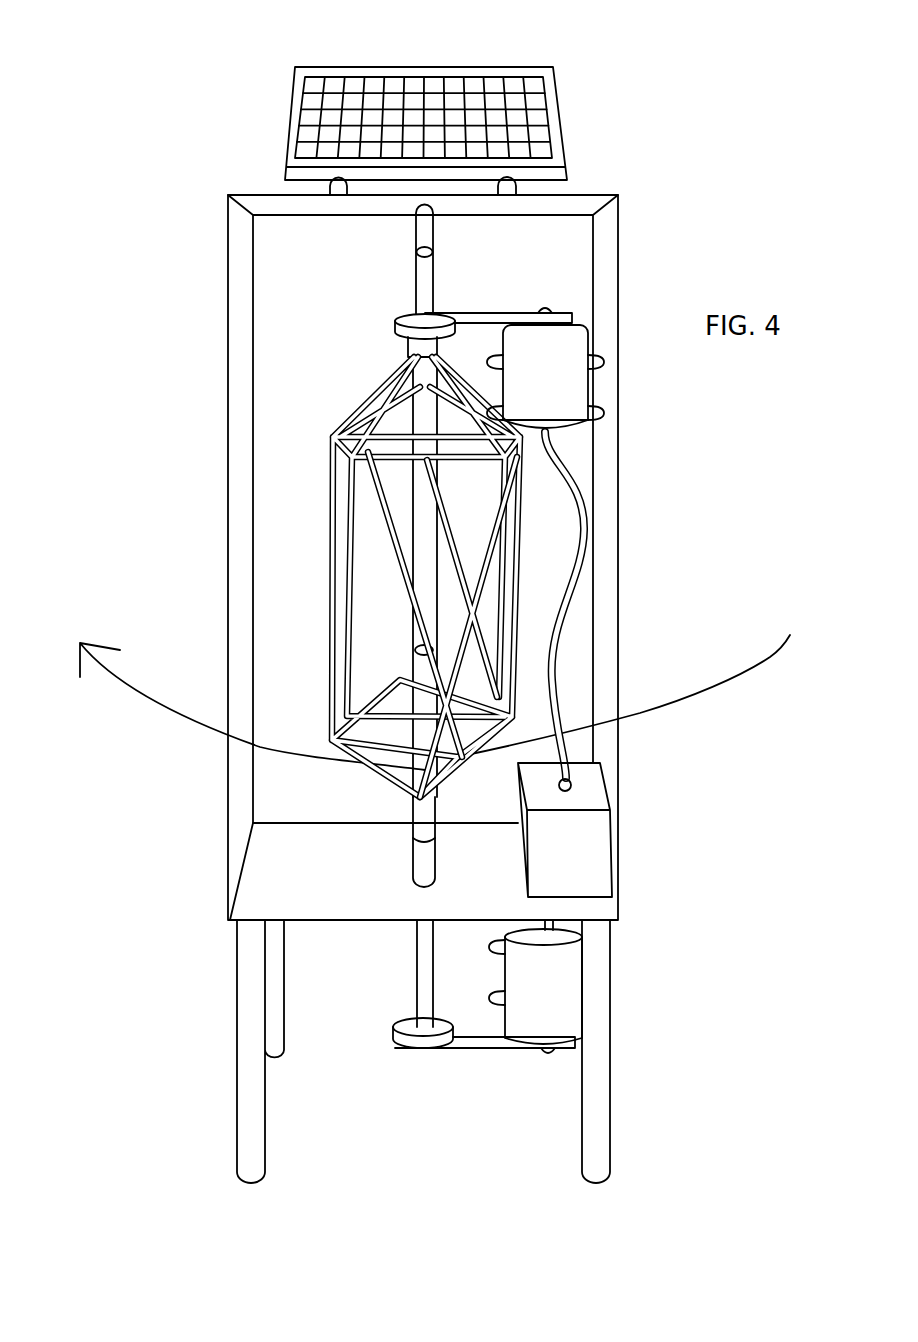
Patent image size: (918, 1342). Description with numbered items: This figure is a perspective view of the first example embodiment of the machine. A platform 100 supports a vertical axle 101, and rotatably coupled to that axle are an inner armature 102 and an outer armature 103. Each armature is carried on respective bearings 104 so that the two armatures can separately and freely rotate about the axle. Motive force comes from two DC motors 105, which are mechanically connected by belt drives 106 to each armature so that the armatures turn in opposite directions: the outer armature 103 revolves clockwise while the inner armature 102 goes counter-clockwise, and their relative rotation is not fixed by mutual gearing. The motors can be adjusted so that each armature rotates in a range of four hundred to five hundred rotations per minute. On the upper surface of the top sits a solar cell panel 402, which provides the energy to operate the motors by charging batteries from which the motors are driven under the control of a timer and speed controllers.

The platform 100 is at (272, 887).
The vertical axle 101 is at (412, 980).
The inner armature 102 is at (503, 535).
The outer armature 103 is at (505, 612).
The bearings 104 is at (415, 250).
The DC motors 105 is at (600, 392).
The belt drives 106 is at (492, 312).
The solar cell panel 402 is at (292, 117).